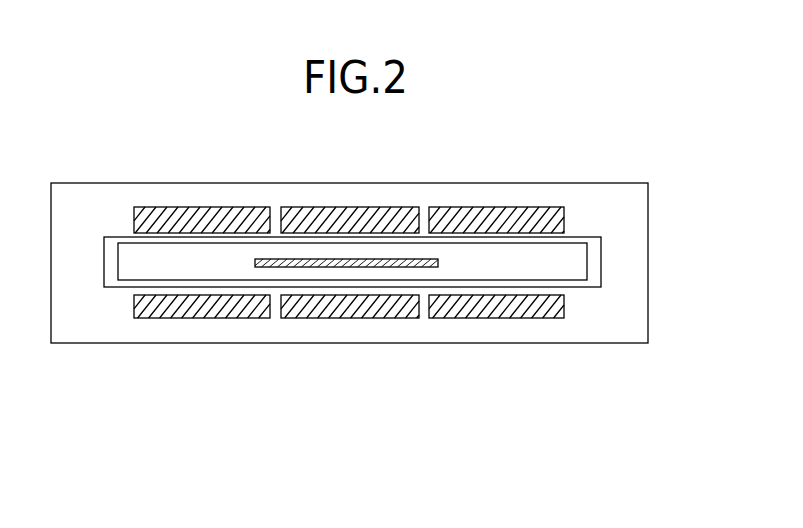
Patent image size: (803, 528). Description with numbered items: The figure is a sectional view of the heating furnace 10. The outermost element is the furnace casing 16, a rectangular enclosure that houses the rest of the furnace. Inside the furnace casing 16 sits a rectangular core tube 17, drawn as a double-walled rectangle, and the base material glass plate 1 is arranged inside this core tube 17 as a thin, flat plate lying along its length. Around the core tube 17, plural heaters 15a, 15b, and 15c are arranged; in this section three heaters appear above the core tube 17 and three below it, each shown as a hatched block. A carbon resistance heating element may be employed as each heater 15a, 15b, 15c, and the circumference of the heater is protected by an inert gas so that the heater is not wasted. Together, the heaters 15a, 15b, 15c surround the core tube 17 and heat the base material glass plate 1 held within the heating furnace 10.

The heating furnace 10 is at (628, 159).
The base material glass plate 1 is at (407, 252).
The heater 15a is at (225, 208).
The heater 15b is at (331, 208).
The heater 15c is at (527, 208).
The furnace casing 16 is at (648, 307).
The core tube 17 is at (601, 257).